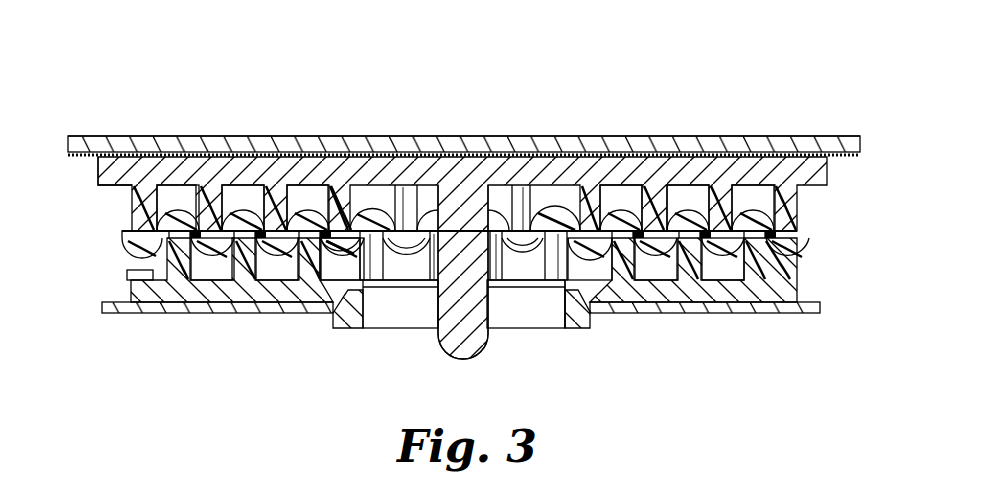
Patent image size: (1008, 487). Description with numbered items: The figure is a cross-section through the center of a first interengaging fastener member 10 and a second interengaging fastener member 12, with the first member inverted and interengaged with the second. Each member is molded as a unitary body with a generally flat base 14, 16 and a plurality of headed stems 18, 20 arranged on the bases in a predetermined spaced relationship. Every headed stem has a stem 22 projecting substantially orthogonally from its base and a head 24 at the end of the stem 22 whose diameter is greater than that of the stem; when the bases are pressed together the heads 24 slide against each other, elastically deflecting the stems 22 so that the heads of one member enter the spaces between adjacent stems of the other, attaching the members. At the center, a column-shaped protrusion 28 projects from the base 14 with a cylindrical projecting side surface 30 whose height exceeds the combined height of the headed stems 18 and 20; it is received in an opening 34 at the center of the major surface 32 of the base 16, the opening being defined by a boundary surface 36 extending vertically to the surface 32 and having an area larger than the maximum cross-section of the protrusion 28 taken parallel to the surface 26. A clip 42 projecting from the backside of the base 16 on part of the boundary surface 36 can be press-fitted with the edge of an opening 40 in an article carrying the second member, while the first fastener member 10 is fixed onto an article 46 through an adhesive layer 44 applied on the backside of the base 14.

The first interengaging fastener member 10 is at (838, 179).
The second interengaging fastener member 12 is at (810, 288).
The base 14 is at (186, 160).
The base 16 is at (227, 297).
The headed stem 18 is at (808, 215).
The headed stem 20 is at (773, 268).
The stem 22 is at (708, 203).
The head 24 is at (172, 210).
The surface 26 is at (113, 190).
The protrusion 28 is at (431, 346).
The projecting side surface 30 is at (500, 305).
The major surface 32 is at (128, 272).
The opening 34 is at (522, 315).
The boundary surface 36 is at (552, 303).
The opening 40 is at (343, 325).
The clip 42 is at (580, 325).
The adhesive layer 44 is at (500, 153).
The article 46 is at (377, 145).